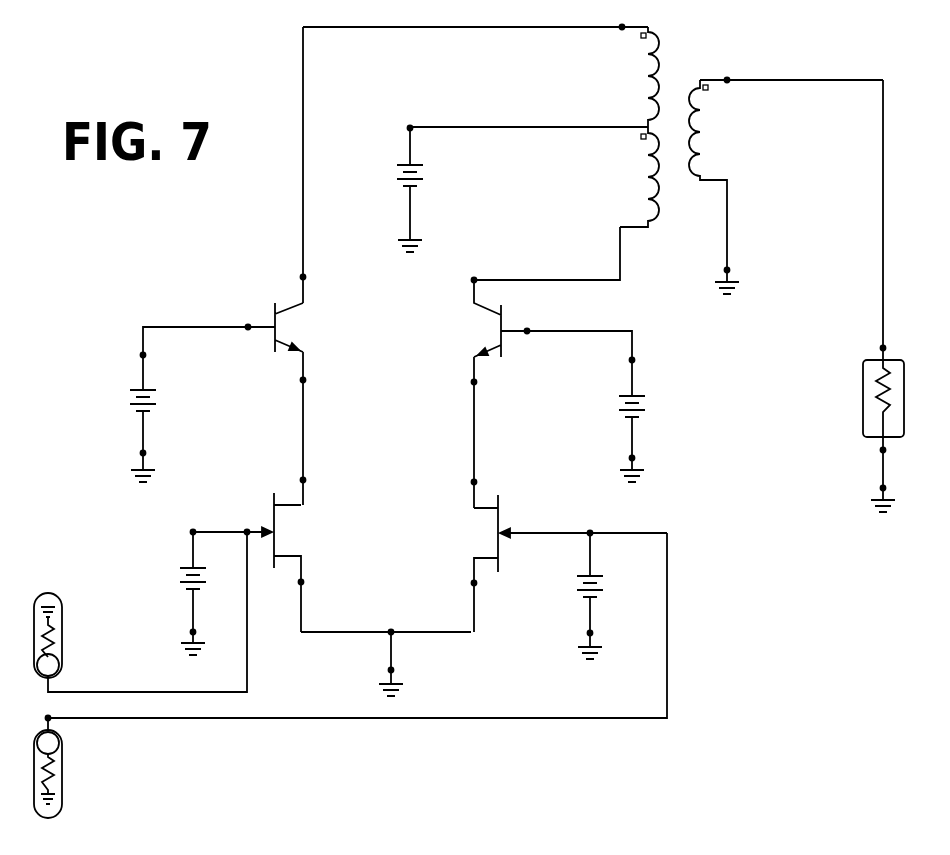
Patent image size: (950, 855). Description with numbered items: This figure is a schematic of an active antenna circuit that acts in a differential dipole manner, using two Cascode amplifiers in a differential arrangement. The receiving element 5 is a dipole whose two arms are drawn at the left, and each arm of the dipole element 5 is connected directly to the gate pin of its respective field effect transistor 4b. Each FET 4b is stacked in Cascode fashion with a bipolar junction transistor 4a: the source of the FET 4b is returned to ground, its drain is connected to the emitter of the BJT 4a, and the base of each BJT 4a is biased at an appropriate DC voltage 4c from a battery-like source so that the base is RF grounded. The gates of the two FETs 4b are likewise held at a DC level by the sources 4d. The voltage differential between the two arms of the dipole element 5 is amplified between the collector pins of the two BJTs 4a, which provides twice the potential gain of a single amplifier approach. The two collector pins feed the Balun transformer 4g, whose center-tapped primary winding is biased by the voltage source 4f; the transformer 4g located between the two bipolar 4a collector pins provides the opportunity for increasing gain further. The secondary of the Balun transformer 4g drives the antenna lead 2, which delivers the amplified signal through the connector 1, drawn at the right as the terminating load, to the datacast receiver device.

The connector 1 is at (857, 396).
The antenna lead 2 is at (877, 282).
The bipolar junction transistor 4a is at (300, 341).
The field effect transistor 4b is at (283, 518).
The DC bias voltage 4c is at (170, 410).
The gate bias voltage source 4d is at (180, 568).
The voltage source 4f is at (415, 200).
The Balun transformer 4g is at (611, 86).
The receiving element 5 is at (72, 620).